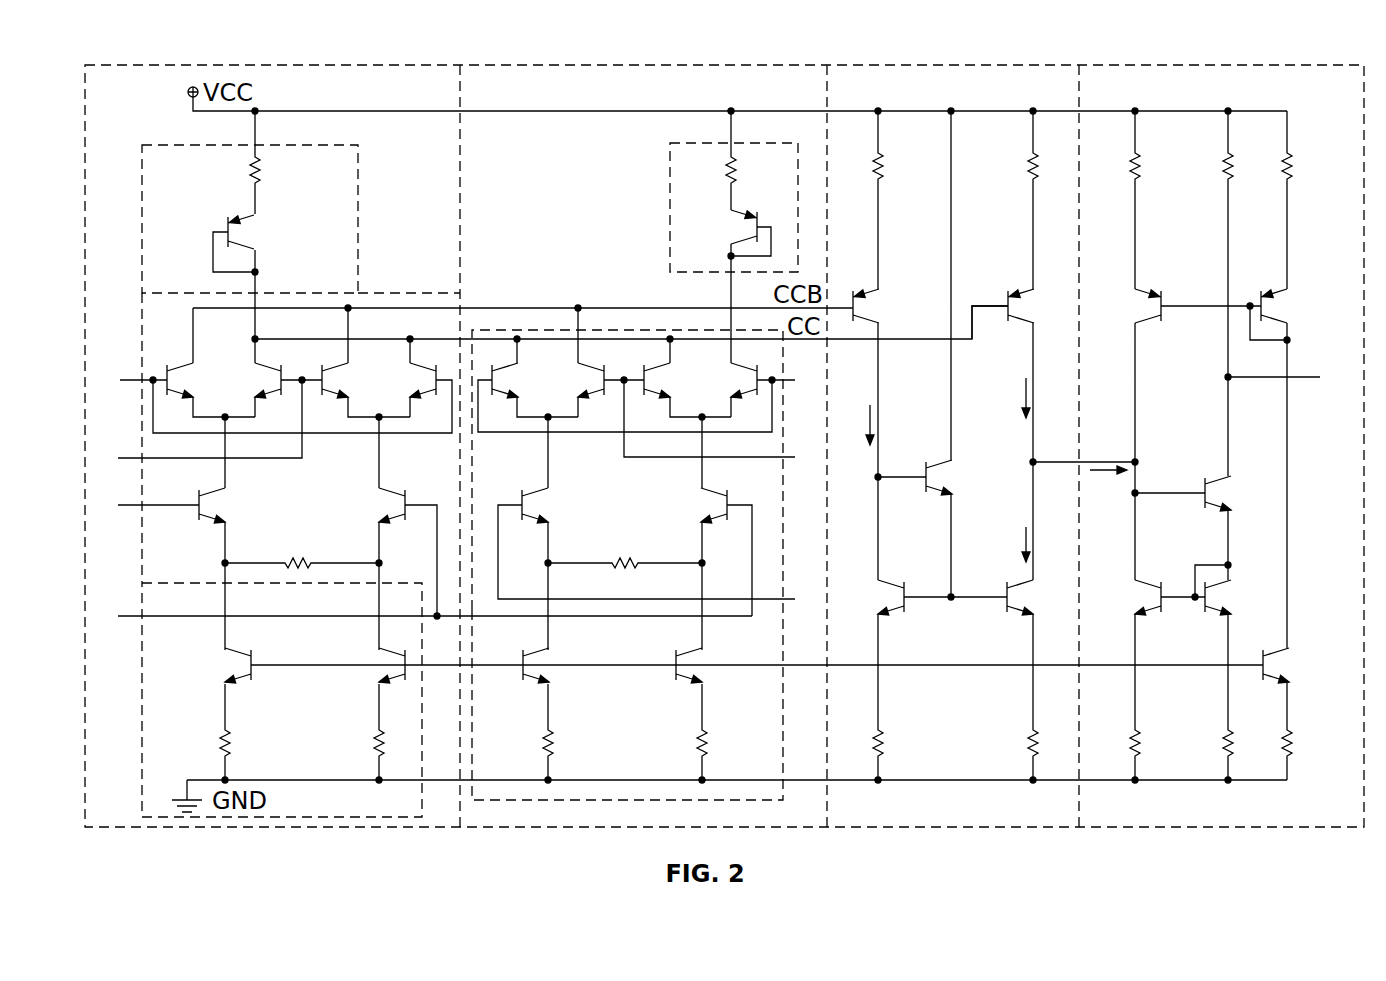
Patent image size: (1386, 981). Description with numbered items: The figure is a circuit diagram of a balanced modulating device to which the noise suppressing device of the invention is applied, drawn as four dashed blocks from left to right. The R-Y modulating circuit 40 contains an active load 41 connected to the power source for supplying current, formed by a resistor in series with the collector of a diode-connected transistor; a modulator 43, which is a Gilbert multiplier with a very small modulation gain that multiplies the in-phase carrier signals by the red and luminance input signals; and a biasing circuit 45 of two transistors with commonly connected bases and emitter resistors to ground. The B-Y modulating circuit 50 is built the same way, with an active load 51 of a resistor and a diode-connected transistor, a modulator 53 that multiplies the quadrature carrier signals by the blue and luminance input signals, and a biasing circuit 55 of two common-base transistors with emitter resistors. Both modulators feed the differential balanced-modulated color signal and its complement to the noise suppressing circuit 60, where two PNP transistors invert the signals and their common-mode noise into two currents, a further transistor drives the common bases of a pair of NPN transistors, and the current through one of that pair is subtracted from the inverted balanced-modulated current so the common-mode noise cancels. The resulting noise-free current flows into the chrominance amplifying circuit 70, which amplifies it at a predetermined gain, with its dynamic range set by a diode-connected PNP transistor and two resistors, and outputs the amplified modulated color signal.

The R-Y modulating circuit 40 is at (377, 65).
The active load 41 is at (358, 203).
The modulator 43 is at (142, 540).
The biasing circuit 45 is at (142, 690).
The B-Y modulating circuit 50 is at (628, 65).
The active load 51 is at (670, 197).
The modulator 53 is at (783, 490).
The biasing circuit 55 is at (783, 690).
The noise suppressing circuit 60 is at (947, 65).
The chrominance amplifying circuit 70 is at (1254, 65).